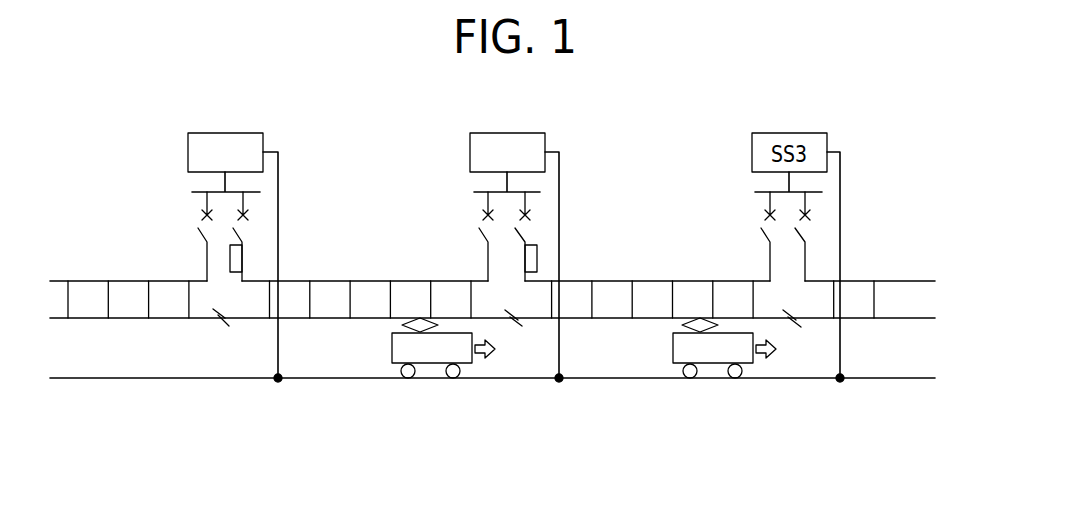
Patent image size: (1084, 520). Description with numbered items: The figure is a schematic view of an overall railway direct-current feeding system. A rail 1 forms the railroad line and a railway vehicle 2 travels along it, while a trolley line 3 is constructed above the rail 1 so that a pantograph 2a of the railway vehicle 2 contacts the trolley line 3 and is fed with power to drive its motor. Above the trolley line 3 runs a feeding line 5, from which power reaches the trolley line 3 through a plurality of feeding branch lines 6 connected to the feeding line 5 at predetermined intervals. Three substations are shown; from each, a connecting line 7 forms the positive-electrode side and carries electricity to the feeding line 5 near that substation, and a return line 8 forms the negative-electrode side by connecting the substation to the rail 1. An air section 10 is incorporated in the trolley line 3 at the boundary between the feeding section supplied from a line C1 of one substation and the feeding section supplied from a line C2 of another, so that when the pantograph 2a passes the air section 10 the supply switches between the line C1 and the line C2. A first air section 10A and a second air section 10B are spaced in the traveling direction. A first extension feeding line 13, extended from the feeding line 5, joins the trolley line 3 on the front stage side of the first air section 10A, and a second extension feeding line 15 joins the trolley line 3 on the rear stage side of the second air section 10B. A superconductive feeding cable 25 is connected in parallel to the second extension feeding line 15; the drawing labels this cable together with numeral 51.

The rail 1 is at (605, 378).
The railway vehicle 2 is at (549, 389).
The pantograph 2a is at (401, 325).
The trolley line 3 is at (893, 318).
The feeding line 5 is at (903, 281).
The feeding branch line 6 is at (69, 300).
The connecting line 7 is at (222, 186).
The return line 8 is at (278, 182).
The air section 10 is at (472, 392).
The first air section 10A is at (215, 327).
The second air section 10B is at (512, 334).
The first extension feeding line 13 is at (207, 258).
The second extension feeding line 15 is at (556, 356).
The superconductive feeding cable 25 is at (433, 375).
The current detector 51 is at (230, 262).
The line of the substation C1 is at (166, 217).
The line of the substation C2 is at (447, 217).